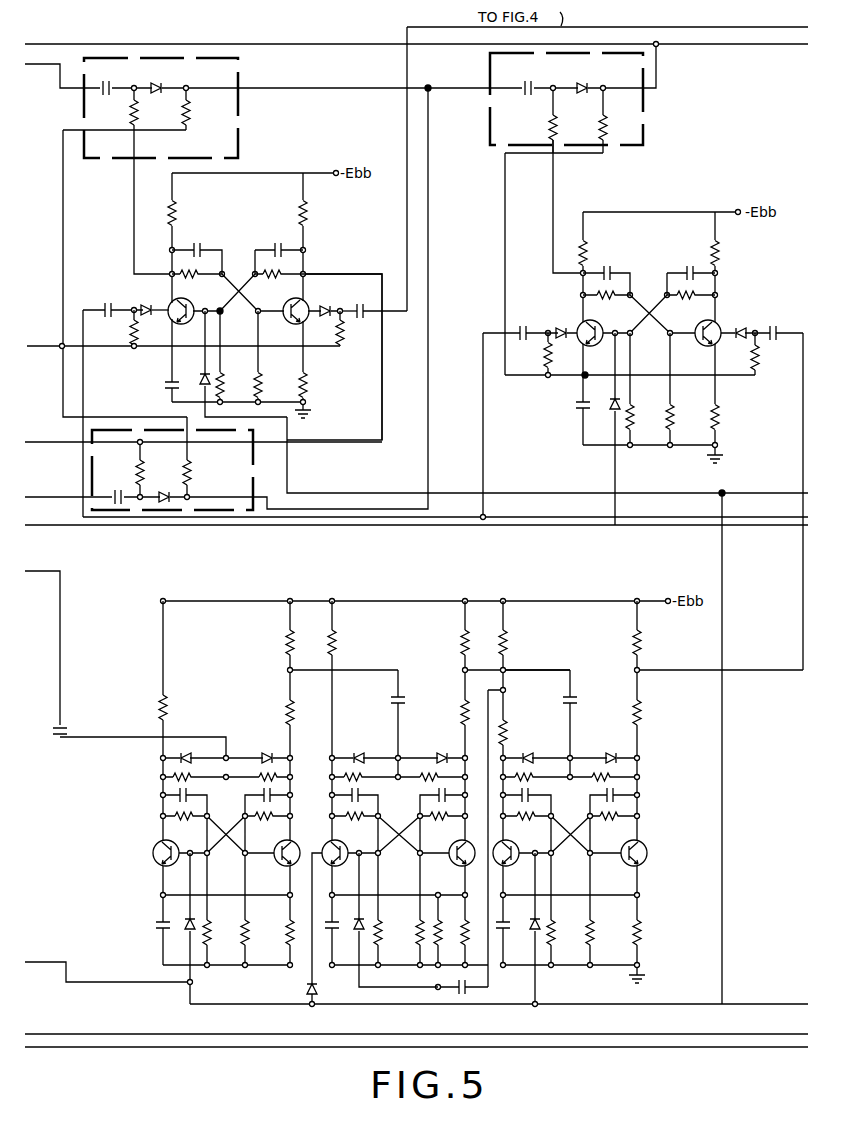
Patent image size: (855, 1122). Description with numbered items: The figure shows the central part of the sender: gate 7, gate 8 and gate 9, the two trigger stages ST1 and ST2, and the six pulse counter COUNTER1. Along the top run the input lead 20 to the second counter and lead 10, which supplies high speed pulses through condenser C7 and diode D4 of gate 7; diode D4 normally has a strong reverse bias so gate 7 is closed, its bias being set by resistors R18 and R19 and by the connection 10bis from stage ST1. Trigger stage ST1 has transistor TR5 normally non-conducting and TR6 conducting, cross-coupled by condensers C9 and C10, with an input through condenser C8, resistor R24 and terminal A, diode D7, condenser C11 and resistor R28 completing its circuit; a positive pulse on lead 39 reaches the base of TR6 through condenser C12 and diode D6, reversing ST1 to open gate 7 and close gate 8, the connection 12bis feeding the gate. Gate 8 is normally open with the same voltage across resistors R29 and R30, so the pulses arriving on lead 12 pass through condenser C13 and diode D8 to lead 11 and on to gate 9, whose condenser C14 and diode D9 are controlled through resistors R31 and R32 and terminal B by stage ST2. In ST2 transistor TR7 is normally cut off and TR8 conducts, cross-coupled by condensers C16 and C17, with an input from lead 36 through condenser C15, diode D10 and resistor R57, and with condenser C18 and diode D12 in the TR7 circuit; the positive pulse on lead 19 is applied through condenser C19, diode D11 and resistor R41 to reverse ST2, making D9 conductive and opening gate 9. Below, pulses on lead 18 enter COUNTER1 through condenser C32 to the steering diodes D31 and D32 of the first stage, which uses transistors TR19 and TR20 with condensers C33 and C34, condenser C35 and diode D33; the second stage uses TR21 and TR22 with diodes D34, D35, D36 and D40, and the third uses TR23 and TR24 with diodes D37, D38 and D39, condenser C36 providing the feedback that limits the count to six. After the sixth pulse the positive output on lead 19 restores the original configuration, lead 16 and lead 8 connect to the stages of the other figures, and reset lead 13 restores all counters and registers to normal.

The input lead 20 is at (55, 28).
The lead 10 is at (52, 50).
The lead 11 is at (471, 86).
The lead 39 is at (388, 308).
The lead 12 is at (48, 482).
The lead 13 is at (791, 1001).
The lead 19 is at (689, 672).
The lead 18 is at (48, 555).
The lead 16 is at (781, 1031).
The gate 8 is at (172, 470).
The lead 36 is at (783, 513).
The gate 7 is at (161, 108).
The gate 9 is at (566, 99).
The line 10bis is at (134, 208).
The line 12bis is at (350, 445).
The terminal A is at (46, 331).
The terminal B is at (577, 158).
The trigger stage ST1 is at (203, 307).
The trigger stage ST2 is at (660, 328).
The counter 1 COUNTER1 is at (415, 586).
The condenser C7 is at (122, 75).
The diode D4 is at (162, 82).
The resistor R18 is at (138, 118).
The resistor R19 is at (190, 118).
The condenser C9 is at (212, 235).
The condenser C10 is at (291, 247).
The condenser C8 is at (111, 305).
The transistor TR5 is at (194, 298).
The transistor TR6 is at (283, 307).
The diode D6 is at (335, 305).
The condenser C12 is at (370, 296).
The resistor R24 is at (130, 352).
The diode D7 is at (200, 385).
The condenser C11 is at (165, 382).
The resistor R28 is at (344, 340).
The resistor R29 is at (136, 468).
The resistor R30 is at (184, 468).
The condenser C13 is at (129, 494).
The diode D8 is at (169, 494).
The condenser C14 is at (530, 95).
The diode D9 is at (592, 95).
The resistor R31 is at (549, 132).
The resistor R32 is at (600, 132).
The condenser C15 is at (528, 328).
The diode D10 is at (568, 328).
The transistor TR7 is at (601, 325).
The transistor TR8 is at (690, 328).
The condenser C16 is at (615, 267).
The condenser C17 is at (695, 267).
The diode D11 is at (748, 325).
The condenser C19 is at (781, 312).
The resistor R57 is at (544, 354).
The resistor R41 is at (760, 360).
The condenser C18 is at (576, 405).
The diode D12 is at (610, 407).
The condenser C32 is at (66, 725).
The diode D31 is at (186, 755).
The diode D32 is at (271, 753).
The diode D34 is at (372, 748).
The diode D35 is at (442, 755).
The diode D37 is at (540, 750).
The diode D38 is at (614, 742).
The condenser C33 is at (188, 793).
The condenser C34 is at (272, 793).
The transistor TR19 is at (155, 848).
The transistor TR20 is at (267, 846).
The transistor TR21 is at (328, 842).
The transistor TR22 is at (441, 846).
The transistor TR23 is at (522, 848).
The transistor TR24 is at (642, 850).
The condenser C35 is at (156, 918).
The diode D33 is at (178, 932).
The diode D40 is at (306, 995).
The diode D36 is at (356, 935).
The diode D39 is at (538, 940).
The condenser C36 is at (468, 992).